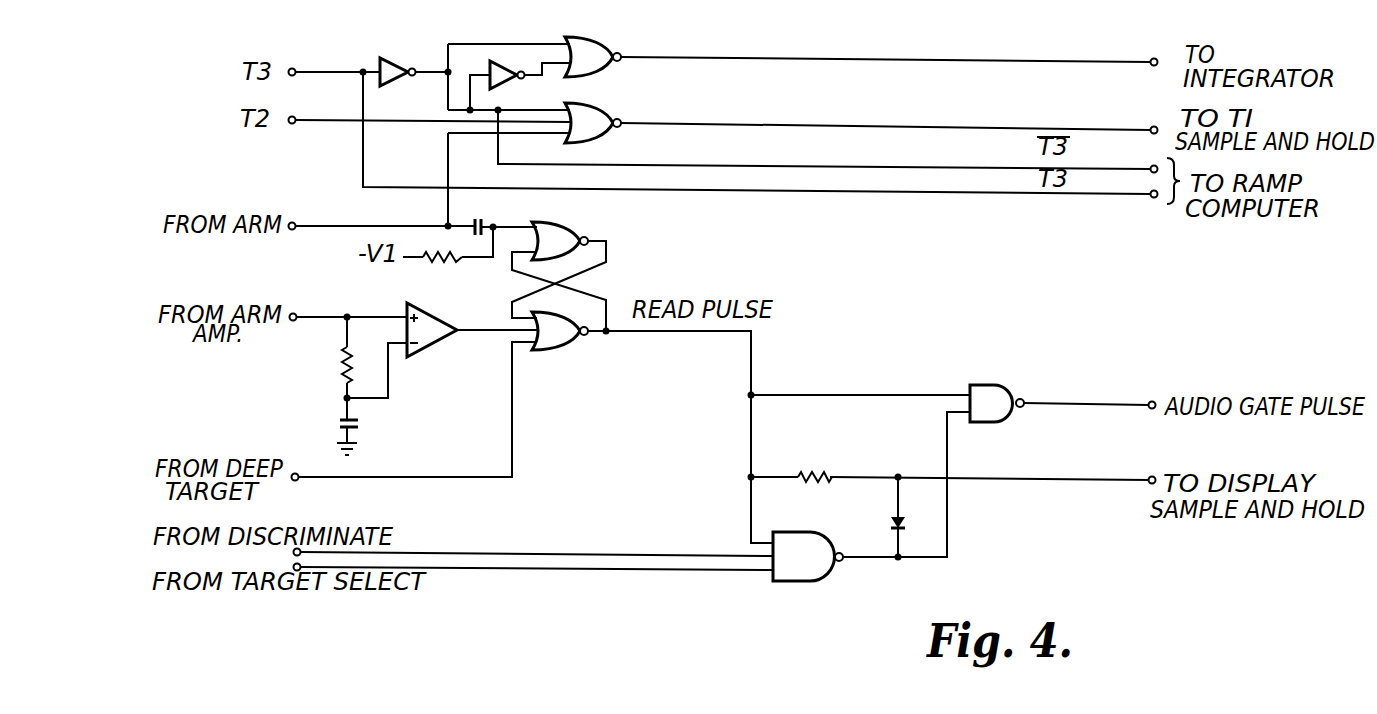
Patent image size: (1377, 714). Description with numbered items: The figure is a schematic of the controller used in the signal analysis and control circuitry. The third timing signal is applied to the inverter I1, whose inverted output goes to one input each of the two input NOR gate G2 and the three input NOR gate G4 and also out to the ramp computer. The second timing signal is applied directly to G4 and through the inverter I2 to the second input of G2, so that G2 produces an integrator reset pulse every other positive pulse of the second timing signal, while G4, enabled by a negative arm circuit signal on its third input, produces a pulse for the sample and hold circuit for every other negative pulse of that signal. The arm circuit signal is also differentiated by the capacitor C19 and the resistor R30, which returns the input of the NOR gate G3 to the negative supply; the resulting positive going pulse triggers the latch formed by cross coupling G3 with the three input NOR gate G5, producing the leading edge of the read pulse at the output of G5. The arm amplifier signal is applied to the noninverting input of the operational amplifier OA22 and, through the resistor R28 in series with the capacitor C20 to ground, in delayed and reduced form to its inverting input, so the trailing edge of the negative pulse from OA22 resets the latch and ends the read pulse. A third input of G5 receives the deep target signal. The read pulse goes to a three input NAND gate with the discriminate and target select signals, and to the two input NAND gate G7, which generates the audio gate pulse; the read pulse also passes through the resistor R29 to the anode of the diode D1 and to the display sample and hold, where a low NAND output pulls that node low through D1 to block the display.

The inverter I1 is at (394, 58).
The inverter I2 is at (511, 84).
The two input NOR gate G2 is at (603, 65).
The three input NOR gate G4 is at (603, 131).
The capacitor C19 is at (481, 212).
The resistor R30 is at (442, 270).
The two input NOR gate G3 is at (574, 235).
The three input NOR gate G5 is at (566, 342).
The operational amplifier OA22 is at (448, 336).
The resistor R28 is at (322, 365).
The capacitor C20 is at (371, 427).
The resistor R29 is at (819, 460).
The diode D1 is at (915, 526).
The two input NAND gate G7 is at (997, 420).